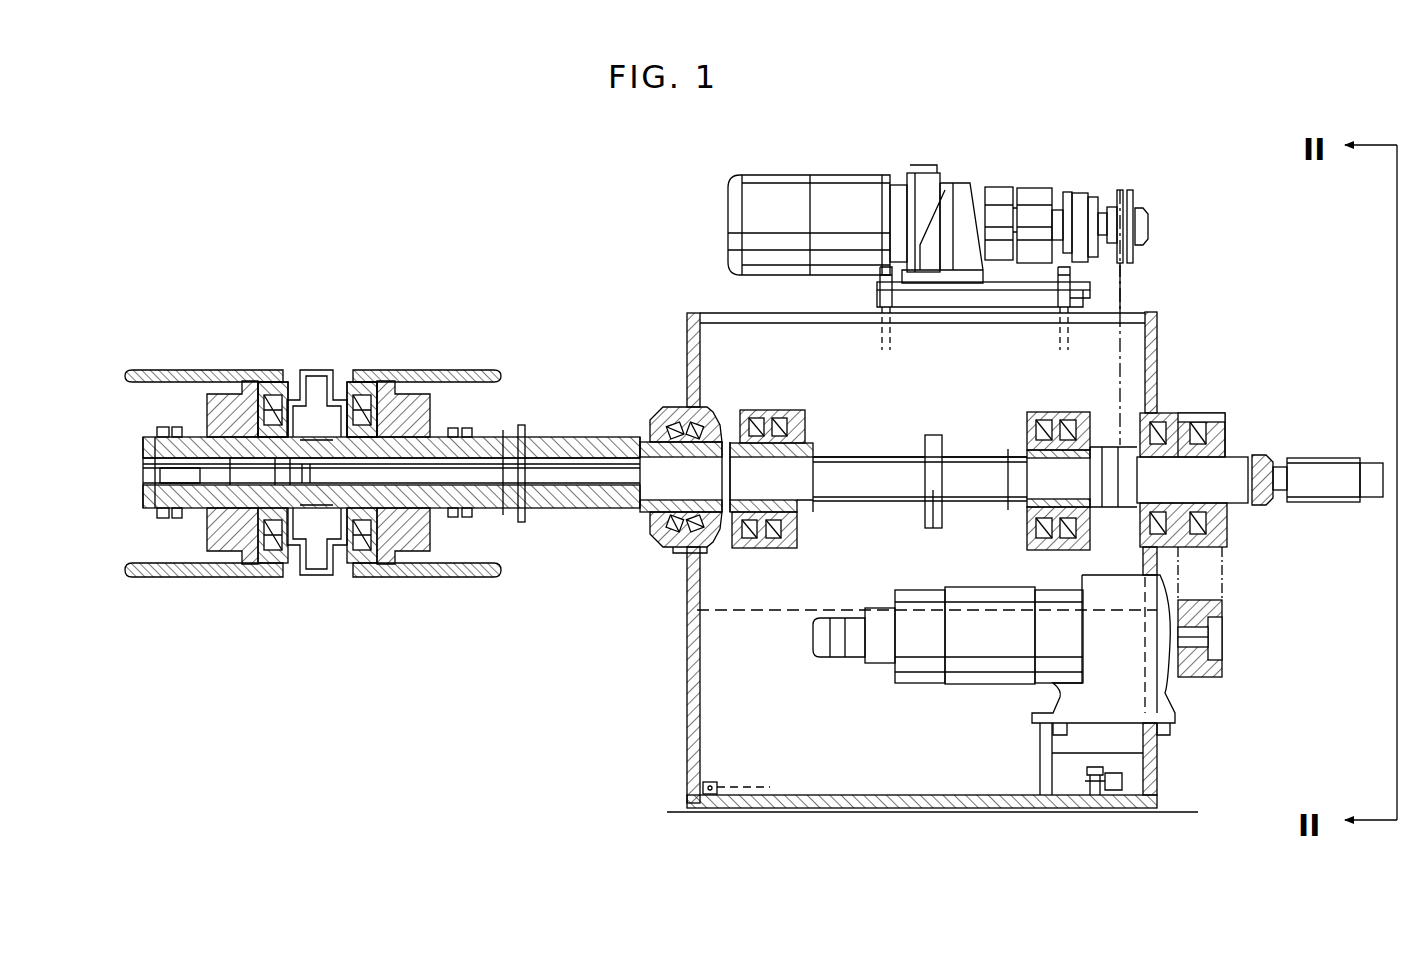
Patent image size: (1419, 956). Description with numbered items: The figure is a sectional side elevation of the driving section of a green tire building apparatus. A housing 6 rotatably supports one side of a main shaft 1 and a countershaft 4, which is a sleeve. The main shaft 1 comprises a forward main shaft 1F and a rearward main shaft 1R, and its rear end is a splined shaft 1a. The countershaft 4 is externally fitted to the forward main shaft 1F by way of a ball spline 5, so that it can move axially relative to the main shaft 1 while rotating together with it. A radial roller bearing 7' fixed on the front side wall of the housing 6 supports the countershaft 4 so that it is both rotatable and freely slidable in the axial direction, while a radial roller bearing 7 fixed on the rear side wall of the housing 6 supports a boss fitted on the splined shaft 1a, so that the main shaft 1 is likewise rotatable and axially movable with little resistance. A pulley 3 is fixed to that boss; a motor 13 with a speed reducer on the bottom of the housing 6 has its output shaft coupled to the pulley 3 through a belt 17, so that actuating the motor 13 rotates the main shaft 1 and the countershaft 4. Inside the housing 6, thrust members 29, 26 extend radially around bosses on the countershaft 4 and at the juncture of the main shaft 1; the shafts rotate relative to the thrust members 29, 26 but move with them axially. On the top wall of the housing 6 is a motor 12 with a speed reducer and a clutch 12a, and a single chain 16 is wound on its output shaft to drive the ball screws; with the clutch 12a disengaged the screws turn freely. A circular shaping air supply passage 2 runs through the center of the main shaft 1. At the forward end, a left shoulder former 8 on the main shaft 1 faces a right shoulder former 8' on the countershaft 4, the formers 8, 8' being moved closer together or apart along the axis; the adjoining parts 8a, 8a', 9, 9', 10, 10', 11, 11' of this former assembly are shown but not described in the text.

The main shaft 1 is at (937, 430).
The forward main shaft 1F is at (887, 470).
The rearward main shaft 1R is at (1198, 480).
The splined shaft 1a is at (1232, 503).
The shaping air supply passage 2 is at (580, 492).
The pulley 3 is at (1208, 413).
The countershaft 4 is at (538, 442).
The ball spline 5 is at (822, 442).
The housing 6 is at (1160, 333).
The radial roller bearing 7 is at (1183, 450).
The radial roller bearing 7' is at (672, 461).
The left shoulder former 8 is at (260, 342).
The clutch hub 8a is at (317, 411).
The right shoulder former 8' is at (382, 342).
The second clutch hub 8a' is at (339, 396).
The hub 9 is at (197, 472).
The second hub 9' is at (441, 472).
The bearing 10 is at (280, 425).
The second bearing 10' is at (400, 425).
The flange disc 11 is at (204, 431).
The second flange disc 11' is at (446, 432).
The motor 12 is at (890, 182).
The clutch 12a is at (1043, 192).
The motor 13 is at (985, 686).
The chain 16 is at (1128, 310).
The belt 17 is at (1222, 556).
The thrust member 26 is at (1050, 413).
The thrust member 29 is at (784, 410).